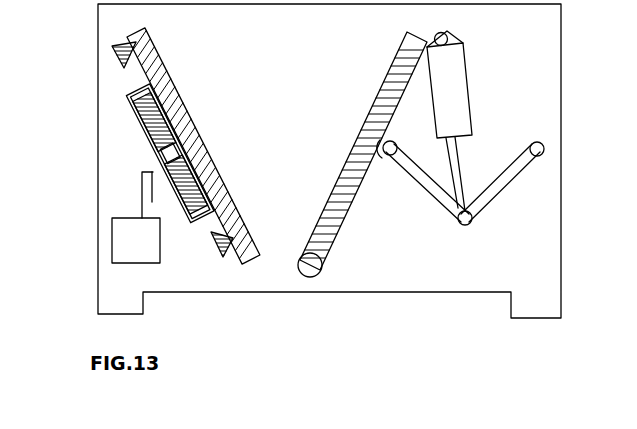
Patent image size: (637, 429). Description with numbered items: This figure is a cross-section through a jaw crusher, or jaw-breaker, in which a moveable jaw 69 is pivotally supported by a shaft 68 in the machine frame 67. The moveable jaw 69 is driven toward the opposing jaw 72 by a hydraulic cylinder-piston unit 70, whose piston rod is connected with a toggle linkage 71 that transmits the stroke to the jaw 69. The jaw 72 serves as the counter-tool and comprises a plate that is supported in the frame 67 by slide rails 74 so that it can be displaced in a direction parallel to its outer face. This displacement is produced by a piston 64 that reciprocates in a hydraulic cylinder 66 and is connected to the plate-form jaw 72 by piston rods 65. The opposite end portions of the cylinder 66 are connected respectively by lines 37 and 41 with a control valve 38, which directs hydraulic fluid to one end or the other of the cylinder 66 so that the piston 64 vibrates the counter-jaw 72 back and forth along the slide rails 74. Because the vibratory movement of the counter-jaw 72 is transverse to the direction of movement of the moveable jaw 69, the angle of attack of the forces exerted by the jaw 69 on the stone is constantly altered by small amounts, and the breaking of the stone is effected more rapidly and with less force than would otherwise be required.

The line 37 is at (135, 176).
The control valve 38 is at (140, 250).
The line 41 is at (152, 201).
The piston 64 is at (139, 157).
The piston rods 65 is at (125, 98).
The hydraulic cylinder 66 is at (127, 130).
The frame 67 is at (266, 73).
The shaft 68 is at (310, 268).
The moveable jaw 69 is at (345, 190).
The hydraulic cylinder-piston unit 70 is at (448, 77).
The toggle linkage 71 is at (490, 198).
The jaw 72 is at (132, 40).
The slide rails 74 is at (123, 65).